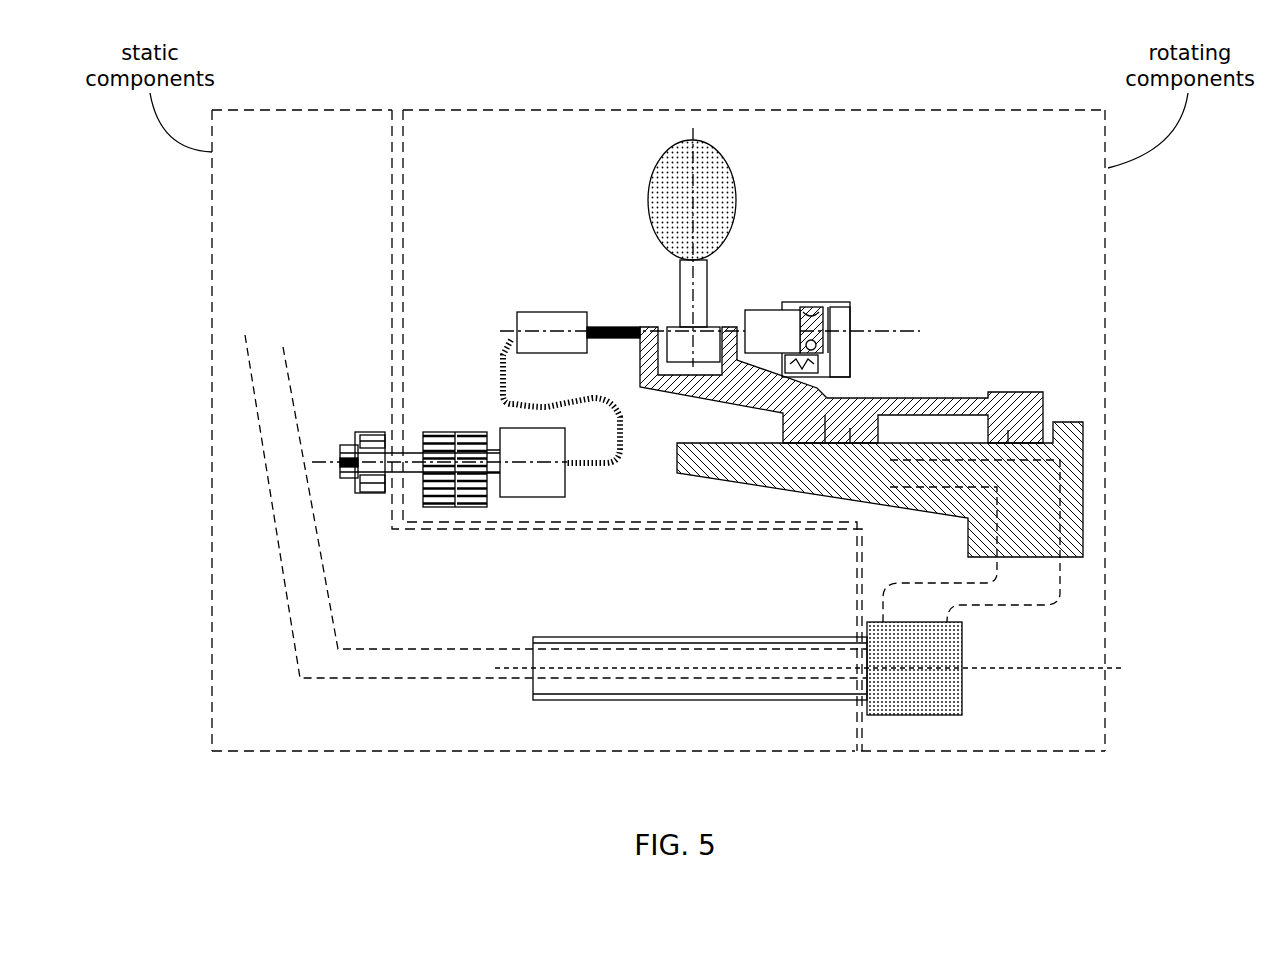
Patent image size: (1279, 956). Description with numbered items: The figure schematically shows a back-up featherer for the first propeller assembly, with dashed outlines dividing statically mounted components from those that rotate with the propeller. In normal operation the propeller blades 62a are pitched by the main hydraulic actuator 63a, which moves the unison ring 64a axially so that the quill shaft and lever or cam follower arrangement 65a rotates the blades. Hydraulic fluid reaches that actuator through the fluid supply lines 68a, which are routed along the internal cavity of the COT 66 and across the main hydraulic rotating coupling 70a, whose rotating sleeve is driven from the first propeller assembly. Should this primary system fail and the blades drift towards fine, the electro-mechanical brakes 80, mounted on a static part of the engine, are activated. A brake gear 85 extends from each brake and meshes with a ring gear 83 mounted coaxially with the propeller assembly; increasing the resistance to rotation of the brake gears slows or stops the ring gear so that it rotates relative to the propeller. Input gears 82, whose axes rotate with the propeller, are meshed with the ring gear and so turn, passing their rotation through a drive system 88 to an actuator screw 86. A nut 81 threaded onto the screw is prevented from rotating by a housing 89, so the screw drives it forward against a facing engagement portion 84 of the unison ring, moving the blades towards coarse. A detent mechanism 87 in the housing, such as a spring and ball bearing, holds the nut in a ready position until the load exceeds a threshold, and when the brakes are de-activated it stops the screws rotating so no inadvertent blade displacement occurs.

The propeller blades 62a is at (653, 162).
The main hydraulic actuator 63a is at (863, 420).
The unison ring 64a is at (676, 390).
The quill shaft and lever or cam follower arrangement 65a is at (683, 337).
The COT 66 is at (773, 700).
The fluid supply lines 68a is at (425, 651).
The main hydraulic rotating coupling 70a is at (914, 668).
The electro-mechanical brakes 80 is at (360, 435).
The nut 81 is at (772, 313).
The input gears 82 is at (454, 468).
The ring gear 83 is at (455, 505).
The engagement portion 84 is at (733, 327).
The brake gear 85 is at (438, 505).
The actuator screw 86 is at (613, 323).
The detent mechanism 87 is at (812, 353).
The drive system 88 is at (490, 357).
The housing 89 is at (843, 350).